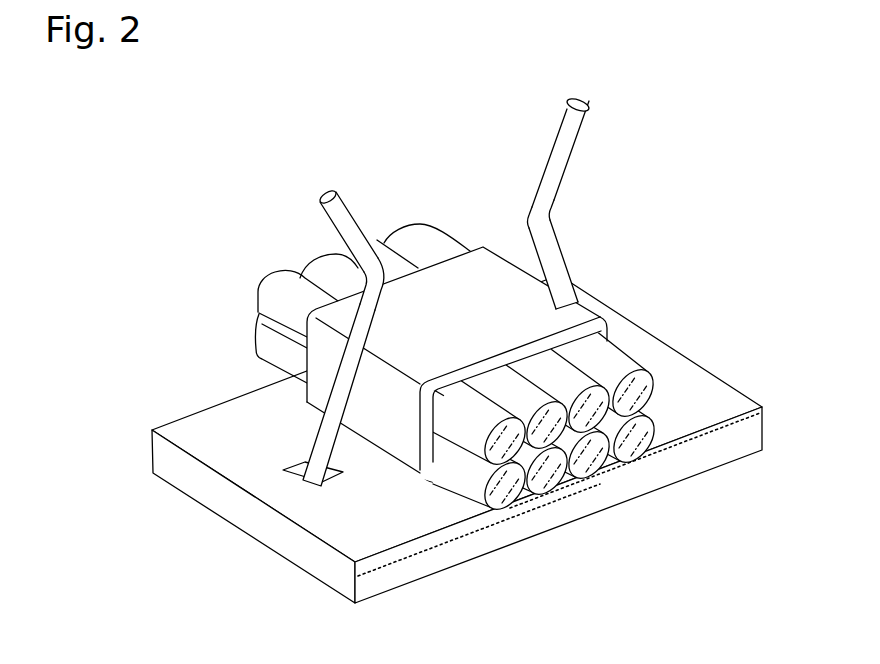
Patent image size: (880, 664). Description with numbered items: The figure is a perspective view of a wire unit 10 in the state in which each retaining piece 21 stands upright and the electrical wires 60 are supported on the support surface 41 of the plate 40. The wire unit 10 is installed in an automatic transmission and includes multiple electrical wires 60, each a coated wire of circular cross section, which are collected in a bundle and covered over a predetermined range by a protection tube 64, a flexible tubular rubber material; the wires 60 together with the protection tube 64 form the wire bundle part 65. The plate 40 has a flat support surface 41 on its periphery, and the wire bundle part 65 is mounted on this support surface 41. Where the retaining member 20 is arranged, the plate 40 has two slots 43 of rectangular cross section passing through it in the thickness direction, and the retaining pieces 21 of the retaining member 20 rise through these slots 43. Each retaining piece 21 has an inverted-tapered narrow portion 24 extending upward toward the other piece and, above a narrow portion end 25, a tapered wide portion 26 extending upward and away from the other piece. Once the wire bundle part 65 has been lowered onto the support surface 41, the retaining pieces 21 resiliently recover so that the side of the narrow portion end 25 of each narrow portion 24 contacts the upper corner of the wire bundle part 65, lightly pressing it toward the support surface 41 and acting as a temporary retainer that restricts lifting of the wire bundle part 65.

The wire unit 10 is at (158, 278).
The retaining member 20 is at (567, 100).
The retaining piece 21 is at (326, 193).
The narrow portion 24 is at (328, 407).
The narrow portion end 25 is at (370, 283).
The wide portion 26 is at (323, 218).
The plate 40 is at (493, 439).
The support surface 41 is at (700, 400).
The slot 43 is at (297, 462).
The electrical wire 60 is at (420, 225).
The protection tube 64 is at (515, 339).
The wire bundle part 65 is at (607, 335).